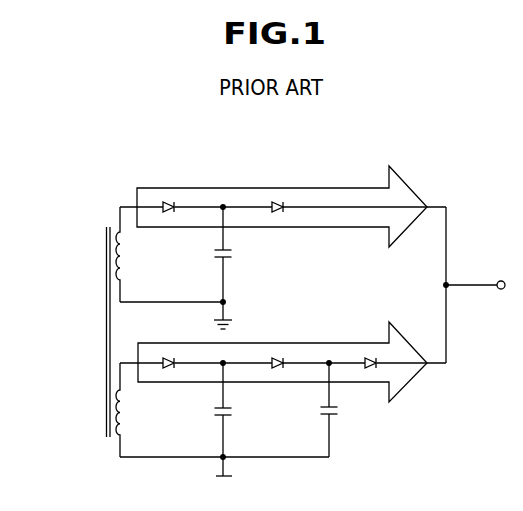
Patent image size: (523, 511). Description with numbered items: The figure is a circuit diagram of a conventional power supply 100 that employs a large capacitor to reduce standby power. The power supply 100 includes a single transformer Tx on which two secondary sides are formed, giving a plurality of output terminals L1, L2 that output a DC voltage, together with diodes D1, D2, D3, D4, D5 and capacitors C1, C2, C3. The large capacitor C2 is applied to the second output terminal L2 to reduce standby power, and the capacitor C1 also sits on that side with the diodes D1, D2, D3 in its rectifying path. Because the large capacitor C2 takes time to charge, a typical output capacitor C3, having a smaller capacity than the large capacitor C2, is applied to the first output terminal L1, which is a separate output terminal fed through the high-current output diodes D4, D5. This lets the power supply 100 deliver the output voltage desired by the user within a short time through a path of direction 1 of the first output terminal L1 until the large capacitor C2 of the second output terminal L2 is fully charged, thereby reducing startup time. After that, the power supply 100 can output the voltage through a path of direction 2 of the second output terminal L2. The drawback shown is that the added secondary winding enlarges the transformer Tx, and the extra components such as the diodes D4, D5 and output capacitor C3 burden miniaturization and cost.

The power supply 100 is at (58, 153).
The transformer Tx is at (108, 322).
The first output terminal L1 is at (129, 254).
The second output terminal L2 is at (129, 410).
The diode D1 is at (180, 357).
The diode D2 is at (288, 357).
The diode D3 is at (382, 357).
The high-current output diode D4 is at (180, 201).
The high-current output diode D5 is at (288, 201).
The capacitor C1 is at (234, 410).
The large capacitor C2 is at (340, 410).
The output capacitor C3 is at (234, 254).
The direction of first output terminal path 1 is at (282, 206).
The direction of second output terminal path 2 is at (282, 362).